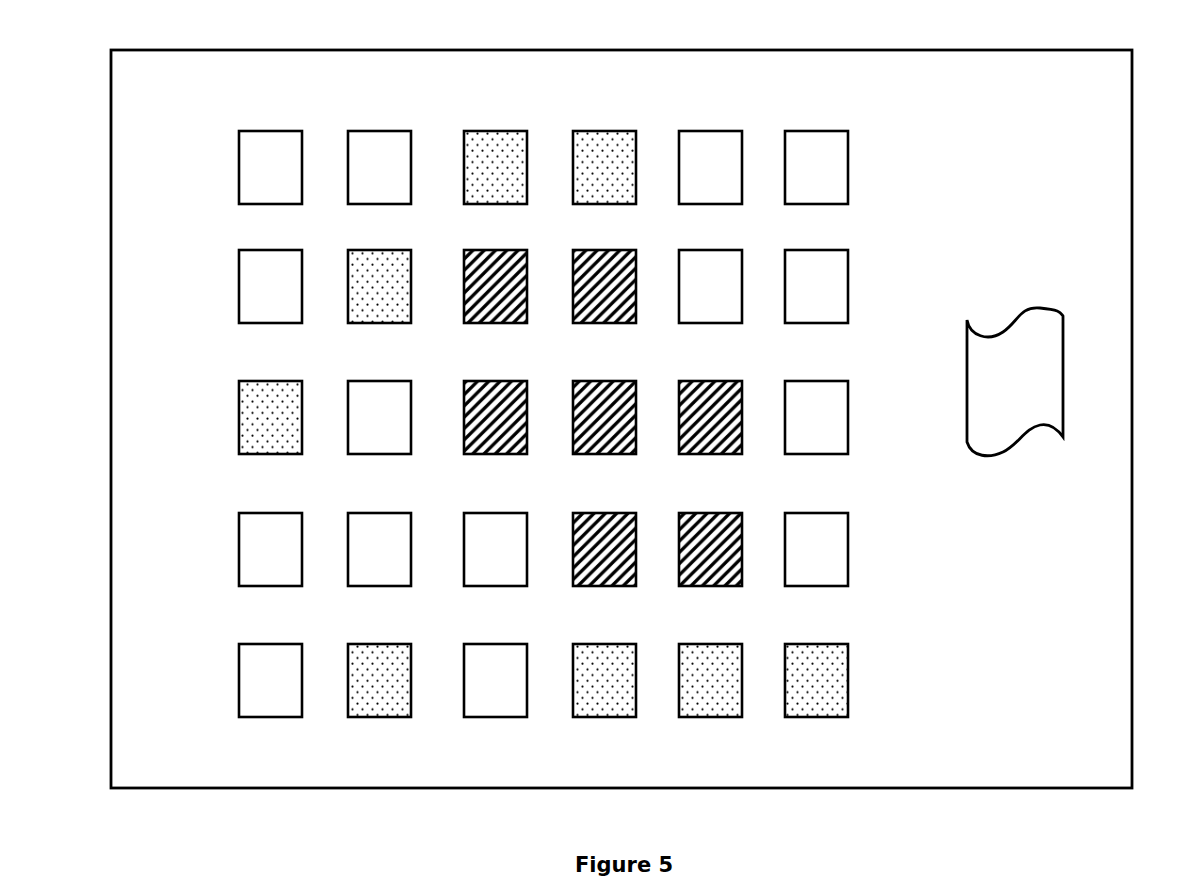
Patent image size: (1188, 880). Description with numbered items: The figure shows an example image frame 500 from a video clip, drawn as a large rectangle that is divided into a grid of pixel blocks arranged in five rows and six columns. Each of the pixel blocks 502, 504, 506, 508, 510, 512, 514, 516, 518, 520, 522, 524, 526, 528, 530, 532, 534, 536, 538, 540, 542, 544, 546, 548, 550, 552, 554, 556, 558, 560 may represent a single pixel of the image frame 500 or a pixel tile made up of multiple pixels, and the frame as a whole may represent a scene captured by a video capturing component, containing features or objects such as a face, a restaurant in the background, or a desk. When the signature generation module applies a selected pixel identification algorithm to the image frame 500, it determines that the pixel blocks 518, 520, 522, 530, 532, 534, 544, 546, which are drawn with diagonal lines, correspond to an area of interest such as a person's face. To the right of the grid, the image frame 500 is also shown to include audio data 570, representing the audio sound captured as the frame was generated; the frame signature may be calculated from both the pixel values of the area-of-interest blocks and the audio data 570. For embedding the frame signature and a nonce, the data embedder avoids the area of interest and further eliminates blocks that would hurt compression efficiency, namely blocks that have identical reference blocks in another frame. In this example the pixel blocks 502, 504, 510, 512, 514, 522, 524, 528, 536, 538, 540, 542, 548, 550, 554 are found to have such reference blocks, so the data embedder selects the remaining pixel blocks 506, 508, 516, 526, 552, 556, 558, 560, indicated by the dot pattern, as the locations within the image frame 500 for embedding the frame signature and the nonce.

The image frame 500 is at (108, 110).
The pixel block 502 is at (239, 143).
The pixel block 504 is at (370, 131).
The pixel block 506 is at (484, 131).
The pixel block 508 is at (593, 131).
The pixel block 510 is at (696, 131).
The pixel block 512 is at (803, 131).
The pixel block 514 is at (239, 263).
The pixel block 516 is at (378, 324).
The pixel block 518 is at (492, 324).
The pixel block 520 is at (606, 324).
The pixel block 522 is at (712, 324).
The pixel block 524 is at (848, 267).
The pixel block 526 is at (239, 394).
The pixel block 528 is at (393, 454).
The pixel block 530 is at (502, 454).
The pixel block 532 is at (612, 454).
The pixel block 534 is at (714, 454).
The pixel block 536 is at (848, 390).
The pixel block 538 is at (239, 526).
The pixel block 540 is at (392, 586).
The pixel block 542 is at (502, 586).
The pixel block 544 is at (610, 586).
The pixel block 546 is at (713, 586).
The pixel block 548 is at (848, 530).
The pixel block 550 is at (239, 658).
The pixel block 552 is at (378, 717).
The pixel block 554 is at (500, 717).
The pixel block 556 is at (597, 717).
The pixel block 558 is at (713, 717).
The pixel block 560 is at (848, 657).
The audio data 570 is at (1033, 305).